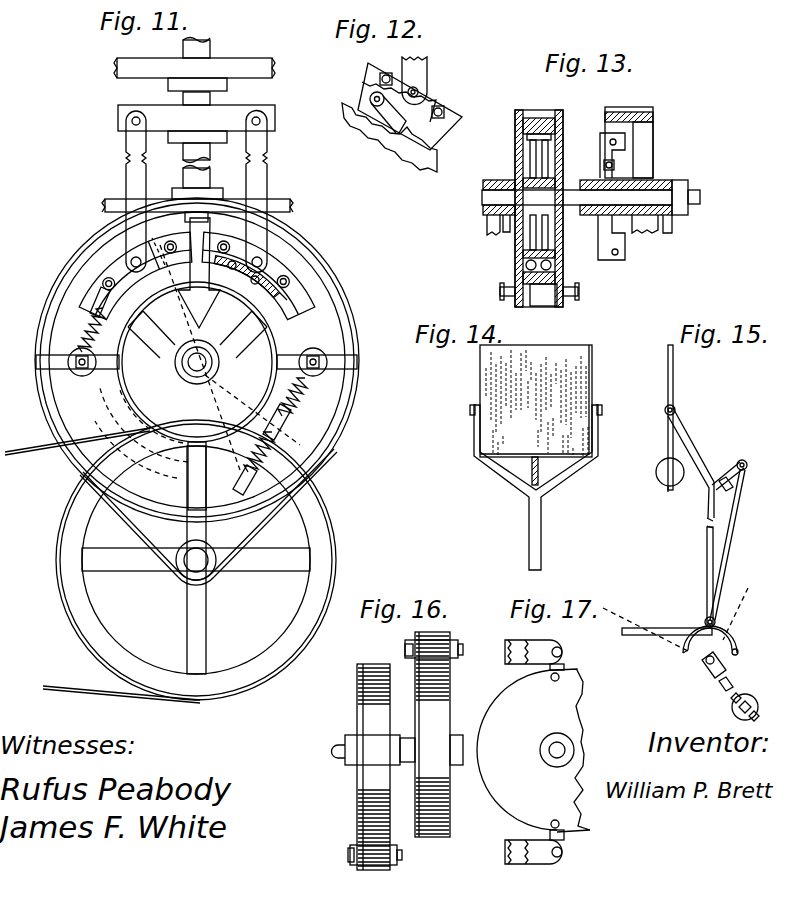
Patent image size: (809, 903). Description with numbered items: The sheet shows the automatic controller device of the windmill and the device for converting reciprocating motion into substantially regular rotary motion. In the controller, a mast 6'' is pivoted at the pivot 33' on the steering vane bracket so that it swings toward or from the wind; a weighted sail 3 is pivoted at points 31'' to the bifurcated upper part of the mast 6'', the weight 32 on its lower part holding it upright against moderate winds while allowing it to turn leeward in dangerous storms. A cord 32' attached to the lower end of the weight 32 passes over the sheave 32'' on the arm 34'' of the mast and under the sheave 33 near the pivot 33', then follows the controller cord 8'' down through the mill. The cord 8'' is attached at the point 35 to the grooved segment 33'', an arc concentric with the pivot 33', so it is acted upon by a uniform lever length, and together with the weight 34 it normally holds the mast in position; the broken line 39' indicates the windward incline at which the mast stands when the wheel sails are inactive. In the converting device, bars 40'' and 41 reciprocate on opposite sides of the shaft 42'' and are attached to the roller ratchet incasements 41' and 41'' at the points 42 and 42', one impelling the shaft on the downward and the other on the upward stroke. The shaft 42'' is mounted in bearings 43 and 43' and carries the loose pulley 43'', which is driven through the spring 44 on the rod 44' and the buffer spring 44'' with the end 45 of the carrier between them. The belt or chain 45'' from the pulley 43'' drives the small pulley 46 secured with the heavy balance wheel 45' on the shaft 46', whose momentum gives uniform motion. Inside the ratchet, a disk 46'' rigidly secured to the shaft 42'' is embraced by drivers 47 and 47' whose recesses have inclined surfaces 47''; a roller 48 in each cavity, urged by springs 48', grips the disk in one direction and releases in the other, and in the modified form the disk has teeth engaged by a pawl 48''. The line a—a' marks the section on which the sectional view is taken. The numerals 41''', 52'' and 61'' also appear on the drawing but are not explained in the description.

In FIG. 14, the sail 3 is at (536, 401).
In FIG. 15, the sail 3 is at (667, 380).
In FIG. 14, the mast 6'' is at (536, 487).
In FIG. 15, the mast 6'' is at (690, 516).
In FIG. 15, the pull-out or controller cord 8'' is at (667, 645).
In FIG. 14, the pivots 31'' is at (534, 414).
In FIG. 15, the pivots 31'' is at (658, 411).
In FIG. 14, the weight 32 is at (521, 471).
In FIG. 15, the weight 32 is at (653, 475).
In FIG. 15, the cord 32' is at (707, 536).
In FIG. 15, the sheave 32'' is at (759, 459).
In FIG. 15, the sheave 33 is at (695, 616).
In FIG. 15, the pivot 33' is at (700, 671).
In FIG. 15, the grooved segment 33'' is at (725, 633).
In FIG. 15, the weight 34 is at (756, 702).
In FIG. 15, the arm 34'' is at (737, 592).
In FIG. 15, the attachment point 35 is at (740, 653).
In FIG. 15, the broken line 39' is at (675, 620).
In FIG. 11, the bar 40'' is at (276, 192).
In FIG. 12, the bar 40'' is at (430, 80).
In FIG. 17, the bar 40'' is at (534, 655).
In FIG. 11, the bar 41 is at (121, 191).
In FIG. 17, the bar 41 is at (533, 852).
In FIG. 16, the roller ratchet incasement 41' is at (375, 767).
In FIG. 17, the roller ratchet incasement 41' is at (579, 840).
In FIG. 11, the roller ratchet incasement 41'' is at (297, 269).
In FIG. 17, the roller ratchet incasement 41'' is at (533, 750).
In FIG. 16, the side plate 41''' is at (434, 734).
In FIG. 11, the pivot point 42 is at (284, 238).
In FIG. 12, the pivot point 42 is at (435, 86).
In FIG. 13, the pivot point 42 is at (524, 292).
In FIG. 16, the pivot point 42 is at (445, 647).
In FIG. 17, the pivot point 42 is at (574, 653).
In FIG. 11, the pivot point 42' is at (102, 241).
In FIG. 16, the pivot point 42' is at (392, 855).
In FIG. 17, the pivot point 42' is at (578, 858).
In FIG. 11, the shaft 42'' is at (221, 362).
In FIG. 13, the shaft 42'' is at (612, 192).
In FIG. 16, the shaft 42'' is at (383, 747).
In FIG. 17, the shaft 42'' is at (538, 750).
In FIG. 13, the bearing 43 is at (497, 195).
In FIG. 13, the bearing 43' is at (635, 192).
In FIG. 11, the pulley 43'' is at (188, 360).
In FIG. 13, the pulley 43'' is at (648, 170).
In FIG. 11, the spring 44 is at (194, 362).
In FIG. 11, the rod 44' is at (232, 487).
In FIG. 11, the spring 44'' is at (281, 452).
In FIG. 11, the carrier 45 is at (208, 363).
In FIG. 13, the carrier 45 is at (601, 209).
In FIG. 11, the balance wheel 45' is at (178, 560).
In FIG. 11, the belt or chain 45'' is at (180, 447).
In FIG. 11, the small pulley or pinion 46 is at (206, 553).
In FIG. 11, the shaft 46' is at (173, 578).
In FIG. 11, the disk 46'' is at (197, 362).
In FIG. 12, the disk 46'' is at (410, 110).
In FIG. 13, the disk 46'' is at (516, 208).
In FIG. 11, the driver 47 is at (135, 276).
In FIG. 13, the driver 47 is at (556, 129).
In FIG. 11, the driver 47' is at (197, 288).
In FIG. 13, the driver 47' is at (541, 289).
In FIG. 11, the inclined surfaces 47'' is at (258, 268).
In FIG. 11, the roller 48 is at (246, 285).
In FIG. 13, the roller 48 is at (519, 158).
In FIG. 11, the springs 48' is at (299, 310).
In FIG. 13, the springs 48' is at (557, 242).
In FIG. 12, the pawl 48'' is at (383, 137).
In FIG. 11, the belt 52'' is at (171, 565).
In FIG. 11, the shaft 61'' is at (199, 109).
In FIG. 11, the section line a is at (156, 243).
In FIG. 11, the section line a' is at (197, 361).